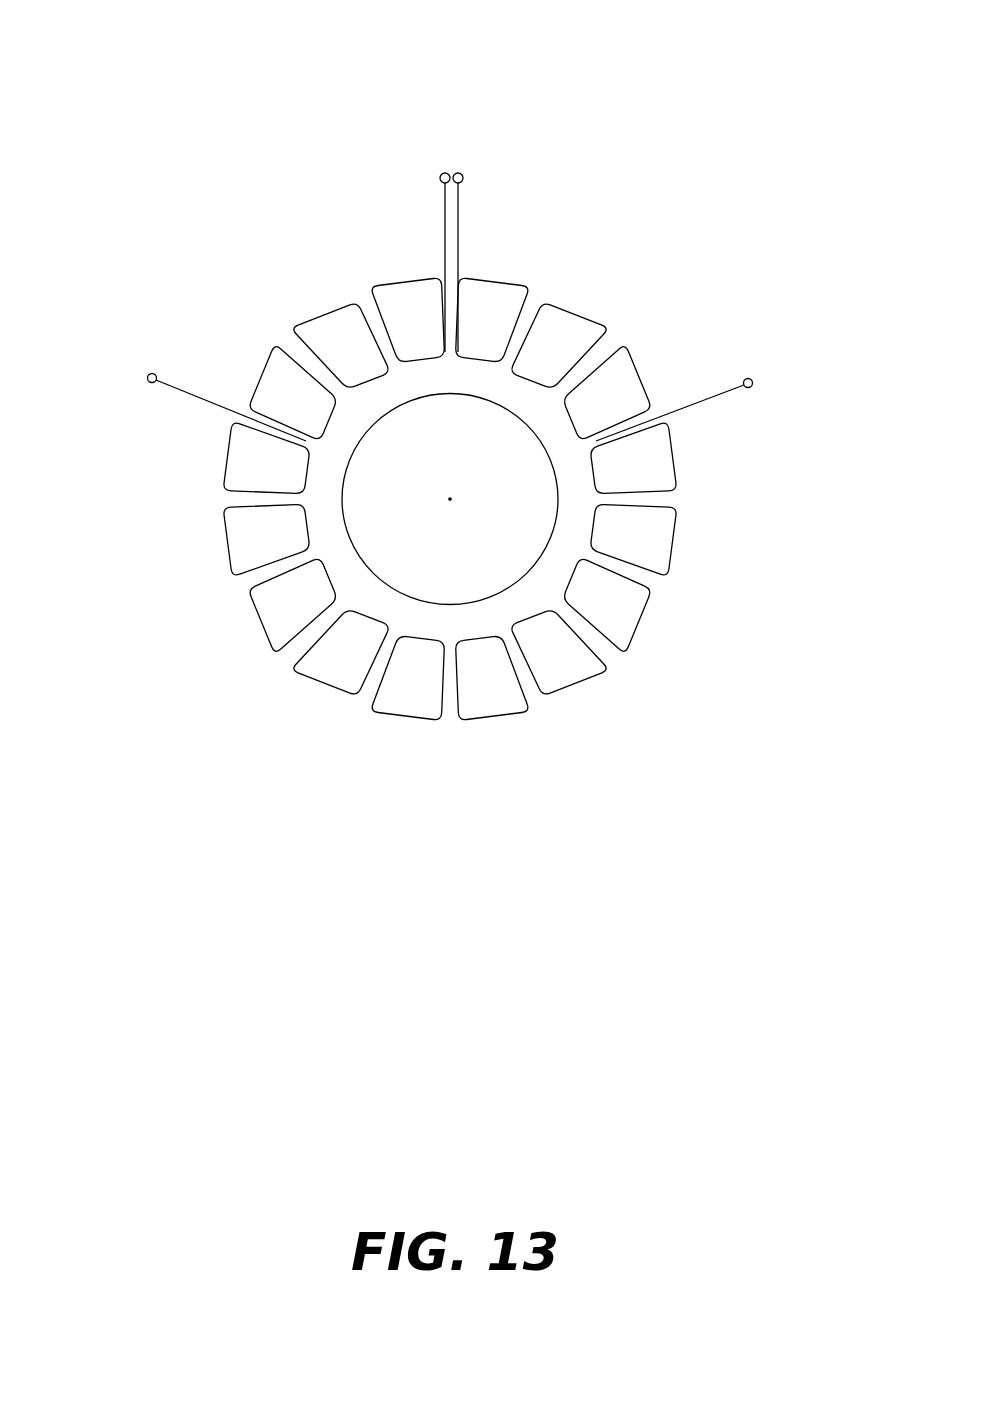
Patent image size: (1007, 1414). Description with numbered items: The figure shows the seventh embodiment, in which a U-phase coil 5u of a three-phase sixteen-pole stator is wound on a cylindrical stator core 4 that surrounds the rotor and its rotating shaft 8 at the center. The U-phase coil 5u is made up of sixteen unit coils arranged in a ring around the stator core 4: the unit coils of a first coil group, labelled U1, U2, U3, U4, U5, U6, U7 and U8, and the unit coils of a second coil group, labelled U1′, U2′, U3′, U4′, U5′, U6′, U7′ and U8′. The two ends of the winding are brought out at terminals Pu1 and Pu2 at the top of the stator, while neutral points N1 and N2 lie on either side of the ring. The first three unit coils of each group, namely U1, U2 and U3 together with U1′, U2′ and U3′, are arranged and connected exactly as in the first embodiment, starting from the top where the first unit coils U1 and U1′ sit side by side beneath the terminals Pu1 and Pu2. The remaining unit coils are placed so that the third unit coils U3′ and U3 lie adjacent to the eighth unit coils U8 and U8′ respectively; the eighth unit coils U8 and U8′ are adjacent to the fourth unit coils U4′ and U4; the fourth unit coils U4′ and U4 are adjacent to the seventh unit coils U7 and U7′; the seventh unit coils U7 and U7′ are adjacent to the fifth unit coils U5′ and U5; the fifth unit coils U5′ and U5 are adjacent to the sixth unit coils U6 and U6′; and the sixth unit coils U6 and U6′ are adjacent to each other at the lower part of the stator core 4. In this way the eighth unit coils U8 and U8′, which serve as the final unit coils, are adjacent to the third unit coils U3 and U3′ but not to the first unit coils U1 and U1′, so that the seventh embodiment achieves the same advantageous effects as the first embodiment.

The U-phase coil 5u is at (564, 164).
The rotating shaft 8 is at (522, 548).
The stator core 4 is at (373, 317).
The power supply terminal 1 Pu1 is at (443, 173).
The power supply terminal 2 Pu2 is at (460, 173).
The neutral point 1 N1 is at (753, 382).
The neutral point 2 N2 is at (148, 375).
The unit coil A1 U1 is at (412, 283).
The unit coil B1 U1′ is at (493, 283).
The unit coil A2 U2 is at (583, 306).
The unit coil B2 U2′ is at (333, 305).
The unit coil A3 U3 is at (256, 372).
The unit coil B3 U3′ is at (643, 368).
The unit coil A4 U4 is at (226, 550).
The unit coil B4 U4′ is at (676, 537).
The unit coil A5 U5 is at (316, 682).
The unit coil B5 U5′ is at (581, 686).
The unit coil A6 U6 is at (503, 718).
The unit coil B6 U6′ is at (400, 717).
The unit coil A7 U7 is at (645, 625).
The unit coil B7 U7′ is at (254, 621).
The unit coil A8 U8 is at (677, 442).
The unit coil B8 U8′ is at (225, 462).